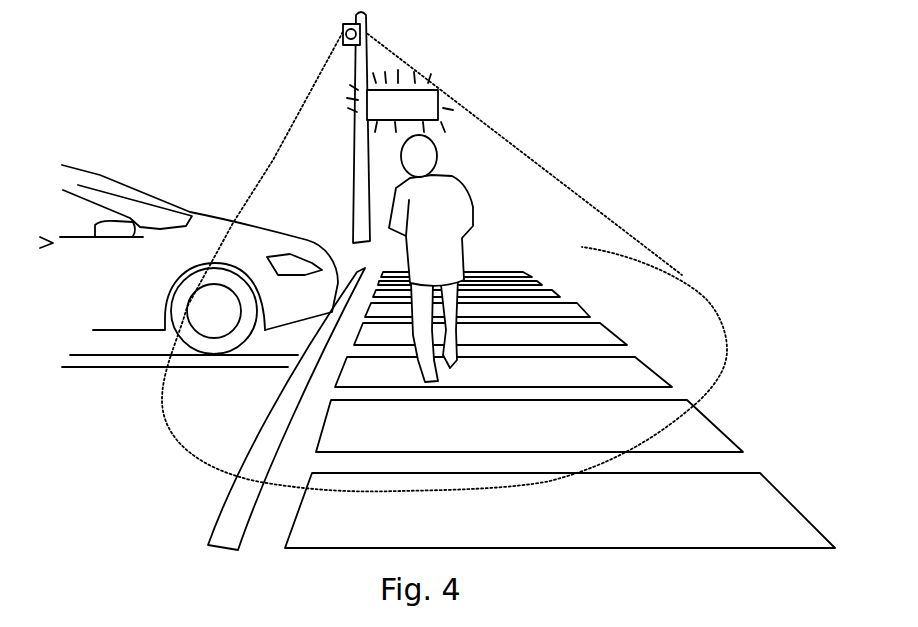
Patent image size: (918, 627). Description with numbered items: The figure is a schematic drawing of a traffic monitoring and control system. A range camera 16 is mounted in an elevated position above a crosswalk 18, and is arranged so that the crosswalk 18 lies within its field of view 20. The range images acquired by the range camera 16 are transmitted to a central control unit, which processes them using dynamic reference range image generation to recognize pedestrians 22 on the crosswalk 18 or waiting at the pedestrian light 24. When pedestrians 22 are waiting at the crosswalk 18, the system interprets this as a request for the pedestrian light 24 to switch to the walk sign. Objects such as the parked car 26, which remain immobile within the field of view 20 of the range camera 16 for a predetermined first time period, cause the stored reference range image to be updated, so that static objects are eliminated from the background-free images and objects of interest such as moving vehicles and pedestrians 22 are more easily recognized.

The range camera 16 is at (343, 31).
The crosswalk 18 is at (598, 172).
The field of view 20 is at (470, 112).
The pedestrian 22 is at (448, 173).
The pedestrian light 24 is at (434, 82).
The parked car 26 is at (138, 185).